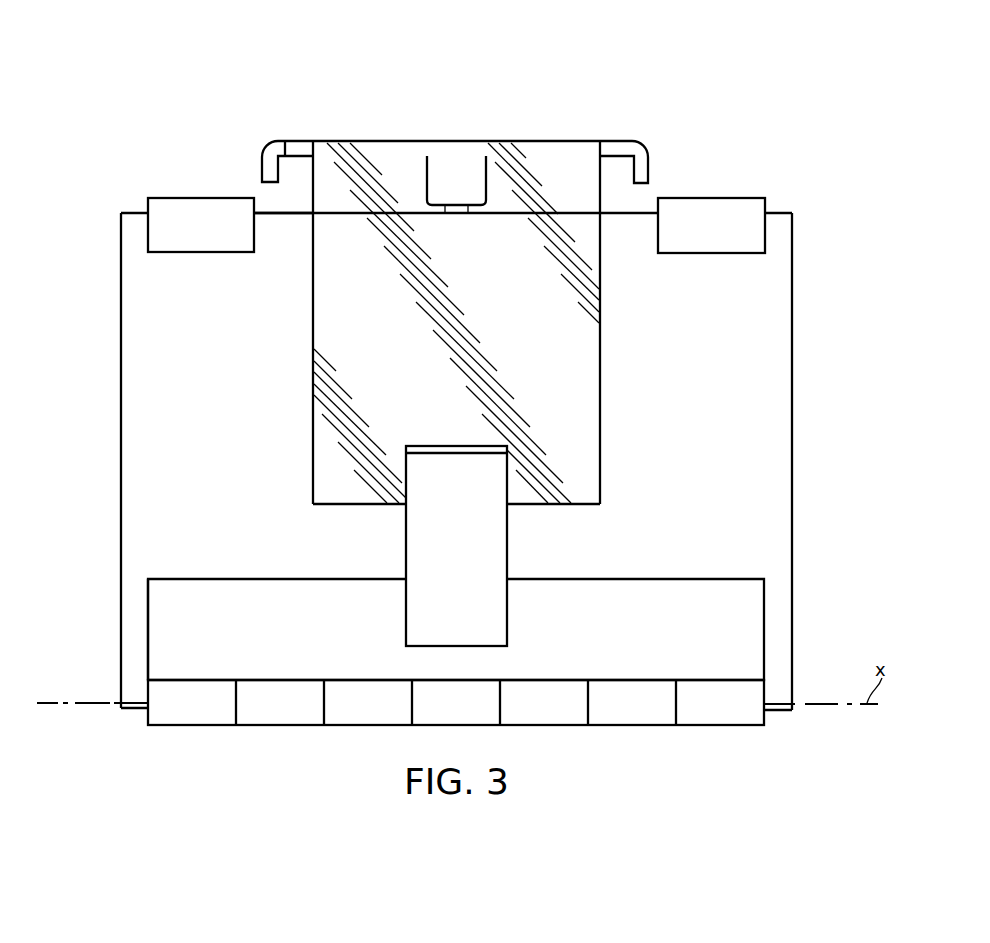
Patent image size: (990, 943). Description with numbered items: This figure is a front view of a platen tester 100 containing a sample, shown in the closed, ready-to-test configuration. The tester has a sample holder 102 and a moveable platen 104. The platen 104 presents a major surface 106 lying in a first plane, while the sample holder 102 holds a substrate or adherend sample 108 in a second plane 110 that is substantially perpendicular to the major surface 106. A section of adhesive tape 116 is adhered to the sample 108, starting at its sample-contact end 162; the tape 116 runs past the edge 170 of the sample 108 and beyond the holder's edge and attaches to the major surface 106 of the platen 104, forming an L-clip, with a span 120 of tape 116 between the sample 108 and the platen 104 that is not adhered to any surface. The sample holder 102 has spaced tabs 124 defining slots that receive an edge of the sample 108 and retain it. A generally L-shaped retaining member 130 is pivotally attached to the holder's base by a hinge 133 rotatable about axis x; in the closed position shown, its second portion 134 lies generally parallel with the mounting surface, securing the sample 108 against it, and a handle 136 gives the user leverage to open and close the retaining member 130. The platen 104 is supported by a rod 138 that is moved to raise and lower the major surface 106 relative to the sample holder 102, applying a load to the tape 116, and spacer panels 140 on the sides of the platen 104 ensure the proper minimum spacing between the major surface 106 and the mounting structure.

The platen tester 100 is at (901, 133).
The sample holder 102 is at (740, 208).
The moveable platen 104 is at (613, 150).
The major surface 106 is at (336, 141).
The sample 108 is at (131, 407).
The second plane 110 is at (783, 283).
The adhesive tape 116 is at (590, 323).
The span 120 is at (330, 188).
The tabs 124 is at (173, 207).
The retaining member 130 is at (752, 623).
The hinge 133 is at (718, 714).
The second portion 134 is at (160, 622).
The handle 136 is at (494, 533).
The rod 138 is at (465, 168).
The spacer panel 140 is at (650, 168).
The sample-contact end 162 is at (594, 498).
The edge of sample 170 is at (273, 212).